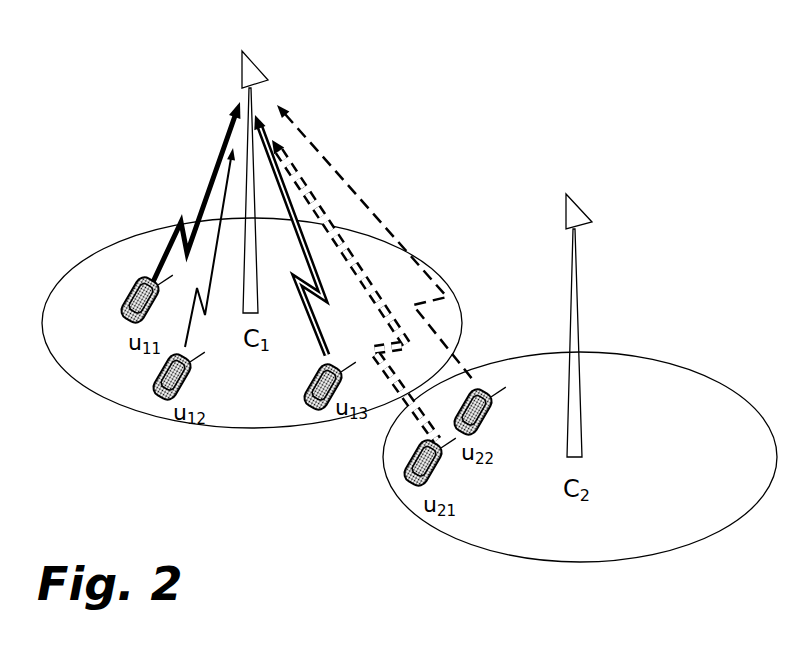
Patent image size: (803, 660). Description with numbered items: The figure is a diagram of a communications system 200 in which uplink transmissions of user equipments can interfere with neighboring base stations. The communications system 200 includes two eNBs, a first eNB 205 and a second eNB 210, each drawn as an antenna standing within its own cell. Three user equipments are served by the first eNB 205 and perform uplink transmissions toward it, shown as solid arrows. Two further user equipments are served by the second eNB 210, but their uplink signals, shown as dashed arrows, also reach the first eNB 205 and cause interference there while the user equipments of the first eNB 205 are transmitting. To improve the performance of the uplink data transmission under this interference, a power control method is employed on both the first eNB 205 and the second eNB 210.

The communications system 200 is at (691, 48).
The eNB 205 is at (262, 65).
The eNB 210 is at (580, 208).